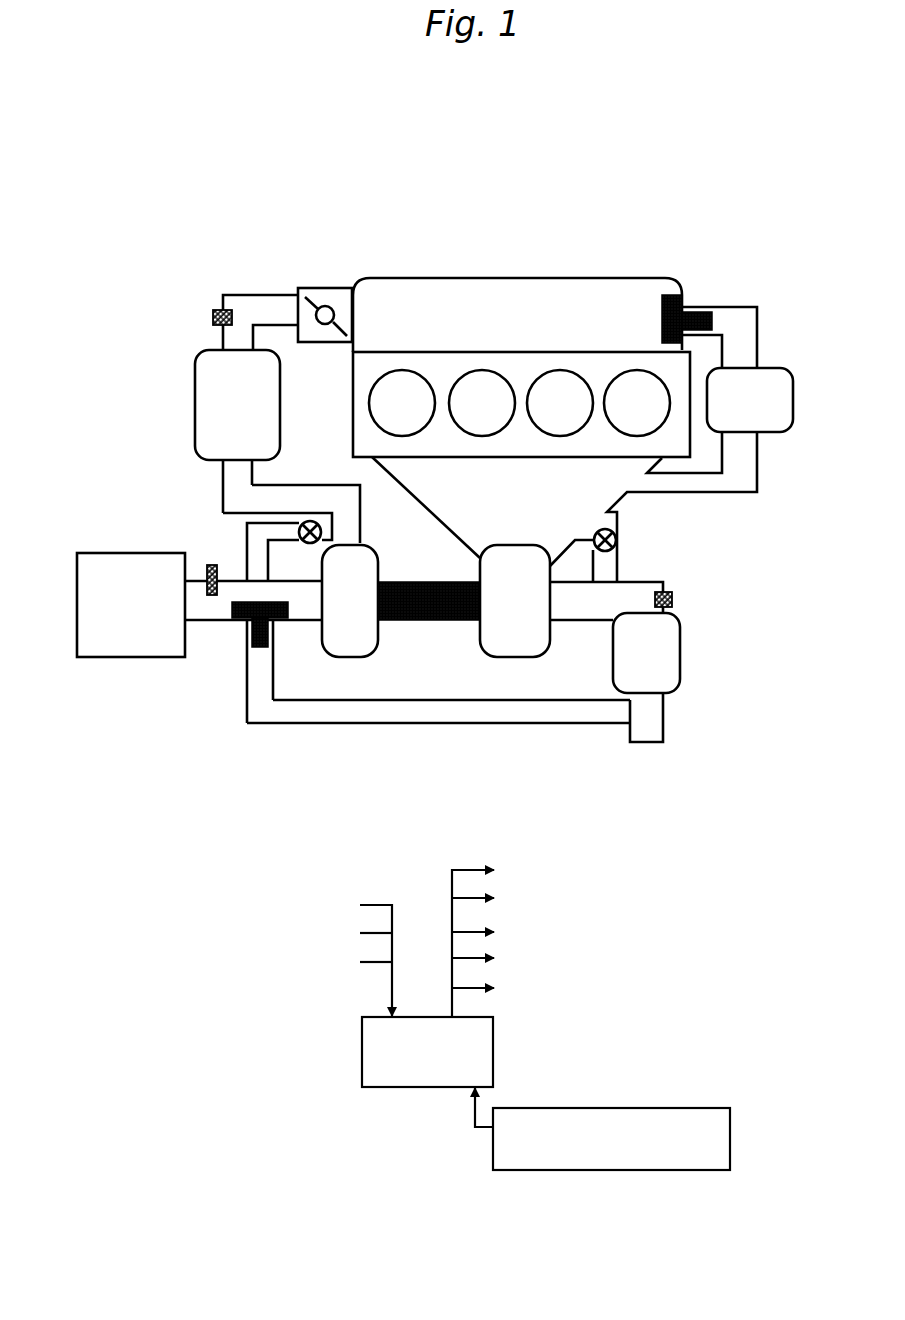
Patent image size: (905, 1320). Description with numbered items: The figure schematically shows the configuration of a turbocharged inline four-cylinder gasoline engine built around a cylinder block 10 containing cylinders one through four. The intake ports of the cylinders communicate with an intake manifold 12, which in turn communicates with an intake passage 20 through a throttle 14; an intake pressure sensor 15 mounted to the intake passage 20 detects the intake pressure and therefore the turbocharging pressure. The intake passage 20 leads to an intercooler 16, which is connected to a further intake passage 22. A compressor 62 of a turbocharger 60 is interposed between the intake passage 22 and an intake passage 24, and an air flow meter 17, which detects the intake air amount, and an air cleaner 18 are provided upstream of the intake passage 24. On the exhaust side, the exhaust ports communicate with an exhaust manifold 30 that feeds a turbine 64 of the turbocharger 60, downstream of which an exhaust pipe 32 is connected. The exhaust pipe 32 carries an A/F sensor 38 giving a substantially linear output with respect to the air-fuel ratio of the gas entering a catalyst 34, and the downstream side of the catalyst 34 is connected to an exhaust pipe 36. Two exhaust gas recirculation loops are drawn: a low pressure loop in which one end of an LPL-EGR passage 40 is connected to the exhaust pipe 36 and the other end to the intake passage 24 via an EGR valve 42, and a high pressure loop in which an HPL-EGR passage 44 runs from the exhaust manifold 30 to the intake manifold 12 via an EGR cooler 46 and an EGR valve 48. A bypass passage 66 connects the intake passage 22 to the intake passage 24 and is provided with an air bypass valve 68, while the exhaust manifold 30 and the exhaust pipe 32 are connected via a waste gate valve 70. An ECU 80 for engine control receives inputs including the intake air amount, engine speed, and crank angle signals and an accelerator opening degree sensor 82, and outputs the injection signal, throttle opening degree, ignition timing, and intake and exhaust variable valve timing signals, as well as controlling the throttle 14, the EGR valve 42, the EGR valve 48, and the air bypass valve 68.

The cylinder block 10 is at (447, 370).
The intake manifold 12 is at (662, 276).
The throttle 14 is at (327, 288).
The intake pressure sensor 15 is at (212, 316).
The intercooler 16 is at (195, 374).
The air flow meter 17 is at (212, 564).
The air cleaner 18 is at (98, 552).
The intake passage 20 is at (240, 293).
The intake passage 22 is at (222, 482).
The intake passage 24 is at (203, 621).
The exhaust manifold 30 is at (620, 498).
The exhaust pipe 32 is at (667, 582).
The catalyst 34 is at (681, 657).
The exhaust pipe 36 is at (665, 723).
The A/F sensor 38 is at (673, 599).
The LPL-EGR passage 40 is at (408, 724).
The EGR valve 42 is at (257, 649).
The HPL-EGR passage 44 is at (758, 457).
The EGR cooler 46 is at (782, 366).
The EGR valve 48 is at (685, 300).
The turbocharger 60 is at (414, 626).
The compressor 62 is at (327, 648).
The turbine 64 is at (545, 650).
The bypass passage 66 is at (270, 560).
The air bypass valve 68 is at (310, 521).
The waste gate valve 70 is at (617, 542).
The ECU 80 is at (495, 1058).
The accelerator opening degree sensor 82 is at (732, 1128).